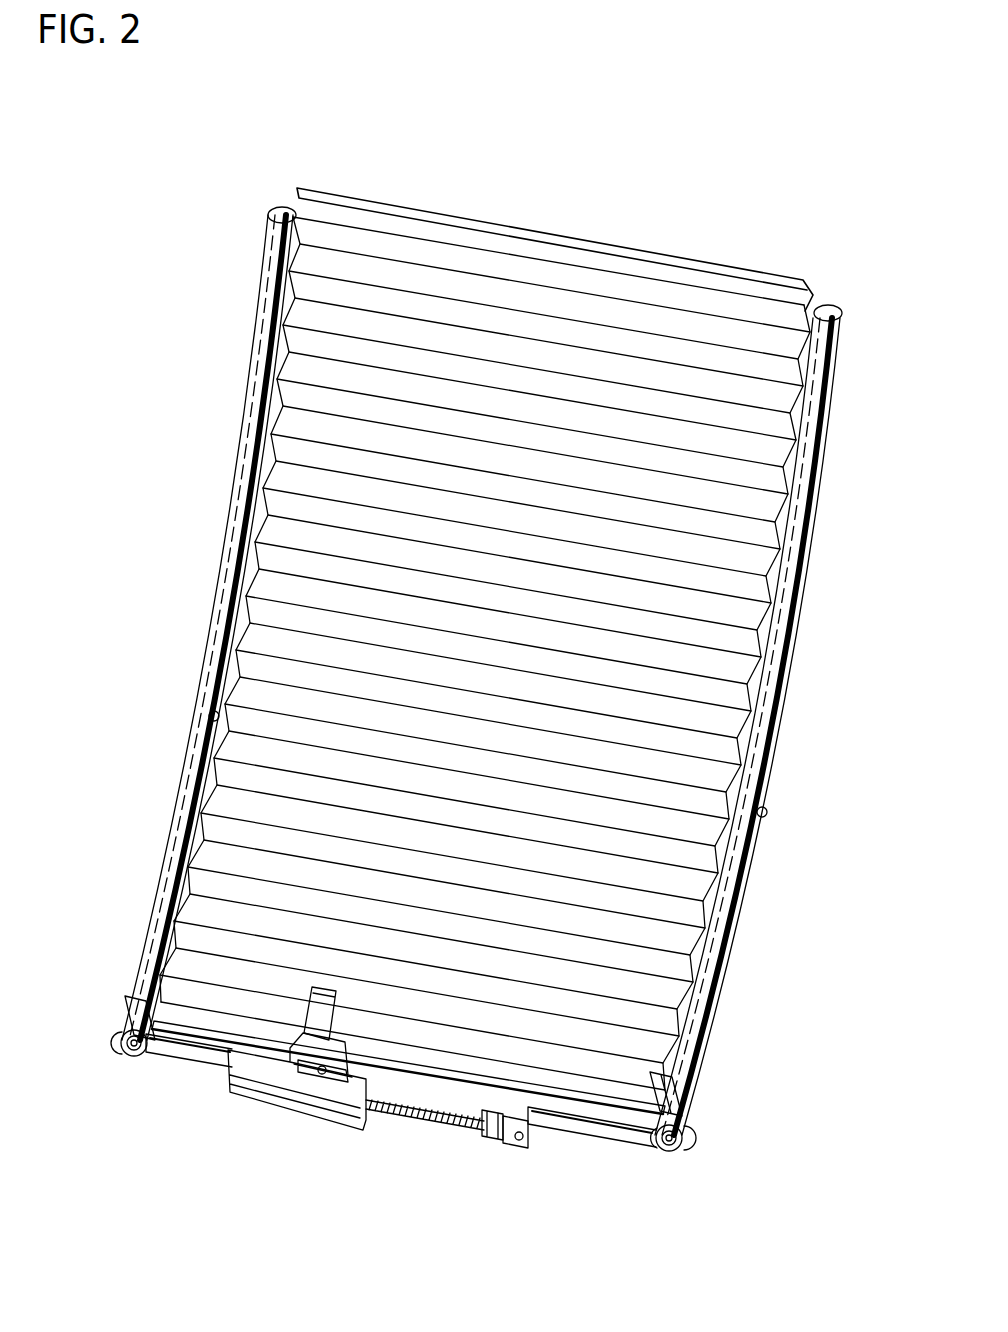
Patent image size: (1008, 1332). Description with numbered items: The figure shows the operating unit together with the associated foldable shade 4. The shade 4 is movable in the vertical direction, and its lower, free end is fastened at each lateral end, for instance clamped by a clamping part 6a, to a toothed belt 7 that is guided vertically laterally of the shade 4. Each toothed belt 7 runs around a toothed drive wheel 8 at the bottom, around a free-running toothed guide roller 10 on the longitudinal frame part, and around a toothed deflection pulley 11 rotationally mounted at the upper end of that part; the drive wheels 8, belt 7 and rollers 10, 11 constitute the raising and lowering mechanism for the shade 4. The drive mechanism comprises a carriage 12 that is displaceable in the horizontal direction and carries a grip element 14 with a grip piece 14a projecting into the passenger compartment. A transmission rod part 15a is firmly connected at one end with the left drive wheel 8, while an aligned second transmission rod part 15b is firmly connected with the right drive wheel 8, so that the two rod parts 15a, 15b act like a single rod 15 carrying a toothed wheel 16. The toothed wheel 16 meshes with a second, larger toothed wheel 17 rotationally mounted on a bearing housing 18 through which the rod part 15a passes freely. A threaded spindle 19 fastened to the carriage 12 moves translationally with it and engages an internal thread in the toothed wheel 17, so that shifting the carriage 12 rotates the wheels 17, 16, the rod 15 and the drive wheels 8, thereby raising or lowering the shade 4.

The shade 4 is at (448, 295).
The toothed belt 7 is at (722, 962).
The toothed deflection pulley 11 is at (838, 312).
The toothed guide roller 10 is at (770, 812).
The clamping part 6a is at (693, 1088).
The toothed drive wheel 8 is at (125, 1058).
The rod 15 is at (573, 1142).
The transmission rod part 15a is at (182, 1055).
The second transmission rod part 15b is at (600, 1137).
The carriage 12 is at (284, 1123).
The grip element 14 is at (305, 1082).
The grip piece 14a is at (316, 1004).
The threaded spindle 19 is at (410, 1123).
The toothed wheel 16 is at (473, 1135).
The second toothed wheel 17 is at (488, 1148).
The bearing housing 18 is at (512, 1152).